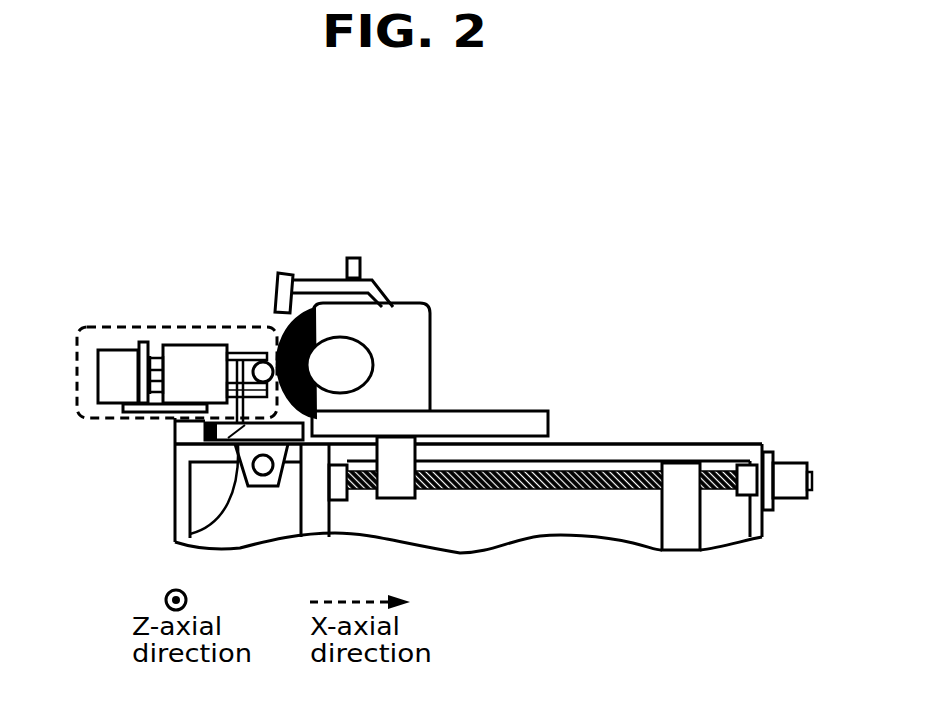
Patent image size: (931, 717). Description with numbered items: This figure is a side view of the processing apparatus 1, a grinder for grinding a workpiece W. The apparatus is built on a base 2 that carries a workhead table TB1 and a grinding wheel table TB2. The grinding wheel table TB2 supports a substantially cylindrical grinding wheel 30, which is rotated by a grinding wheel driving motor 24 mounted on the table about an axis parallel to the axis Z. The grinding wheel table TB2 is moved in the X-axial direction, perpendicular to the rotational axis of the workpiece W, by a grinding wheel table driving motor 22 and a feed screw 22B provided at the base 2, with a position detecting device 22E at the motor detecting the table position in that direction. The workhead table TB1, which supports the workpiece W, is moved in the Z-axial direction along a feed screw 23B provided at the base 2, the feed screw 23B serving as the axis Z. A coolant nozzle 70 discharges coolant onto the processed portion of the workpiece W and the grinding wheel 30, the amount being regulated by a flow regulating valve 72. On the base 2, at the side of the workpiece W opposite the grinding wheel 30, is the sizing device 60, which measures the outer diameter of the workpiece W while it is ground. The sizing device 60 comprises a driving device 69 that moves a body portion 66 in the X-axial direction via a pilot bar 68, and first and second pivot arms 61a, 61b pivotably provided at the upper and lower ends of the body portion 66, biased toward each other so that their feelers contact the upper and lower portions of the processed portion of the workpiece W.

The processing apparatus 1 is at (657, 298).
The base 2 is at (180, 482).
The grinding wheel table driving motor 22 is at (785, 462).
The feed screw 22B is at (527, 491).
The position detecting device 22E is at (812, 498).
The feed screw 23B is at (268, 487).
The grinding wheel driving motor 24 is at (357, 363).
The grinding wheel 30 is at (290, 330).
The sizing device 60 is at (128, 327).
The first pivot arm 61a is at (243, 350).
The second pivot arm 61b is at (237, 443).
The body portion 66 is at (198, 379).
The pilot bar 68 is at (148, 410).
The driving device 69 is at (115, 372).
The coolant nozzle 70 is at (289, 273).
The flow regulating valve 72 is at (362, 264).
The workhead table TB1 is at (172, 540).
The grinding wheel table TB2 is at (470, 422).
The workpiece W is at (256, 364).